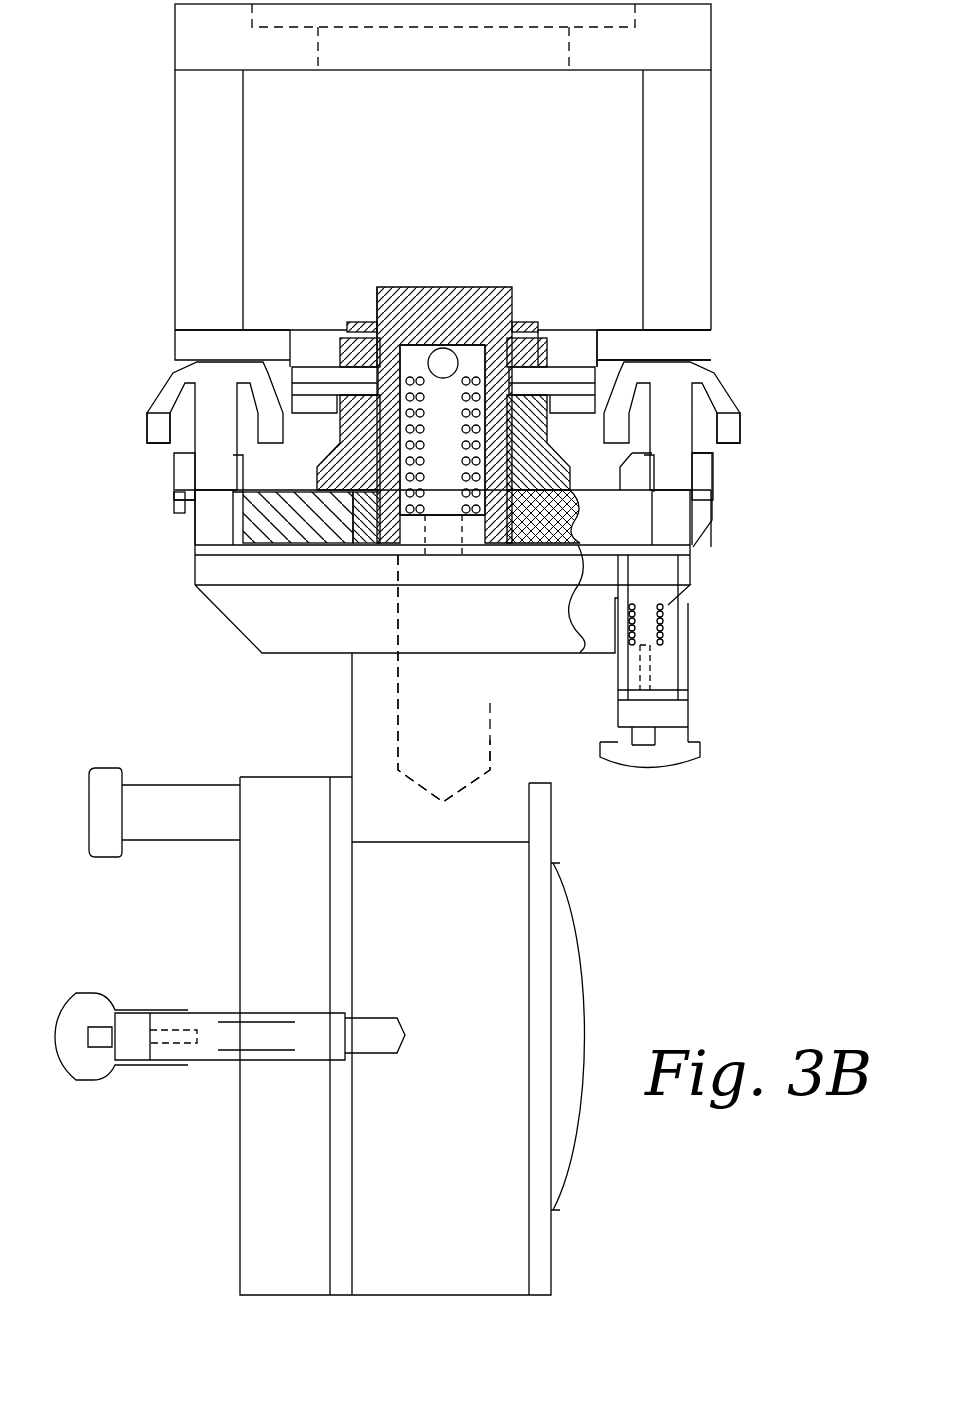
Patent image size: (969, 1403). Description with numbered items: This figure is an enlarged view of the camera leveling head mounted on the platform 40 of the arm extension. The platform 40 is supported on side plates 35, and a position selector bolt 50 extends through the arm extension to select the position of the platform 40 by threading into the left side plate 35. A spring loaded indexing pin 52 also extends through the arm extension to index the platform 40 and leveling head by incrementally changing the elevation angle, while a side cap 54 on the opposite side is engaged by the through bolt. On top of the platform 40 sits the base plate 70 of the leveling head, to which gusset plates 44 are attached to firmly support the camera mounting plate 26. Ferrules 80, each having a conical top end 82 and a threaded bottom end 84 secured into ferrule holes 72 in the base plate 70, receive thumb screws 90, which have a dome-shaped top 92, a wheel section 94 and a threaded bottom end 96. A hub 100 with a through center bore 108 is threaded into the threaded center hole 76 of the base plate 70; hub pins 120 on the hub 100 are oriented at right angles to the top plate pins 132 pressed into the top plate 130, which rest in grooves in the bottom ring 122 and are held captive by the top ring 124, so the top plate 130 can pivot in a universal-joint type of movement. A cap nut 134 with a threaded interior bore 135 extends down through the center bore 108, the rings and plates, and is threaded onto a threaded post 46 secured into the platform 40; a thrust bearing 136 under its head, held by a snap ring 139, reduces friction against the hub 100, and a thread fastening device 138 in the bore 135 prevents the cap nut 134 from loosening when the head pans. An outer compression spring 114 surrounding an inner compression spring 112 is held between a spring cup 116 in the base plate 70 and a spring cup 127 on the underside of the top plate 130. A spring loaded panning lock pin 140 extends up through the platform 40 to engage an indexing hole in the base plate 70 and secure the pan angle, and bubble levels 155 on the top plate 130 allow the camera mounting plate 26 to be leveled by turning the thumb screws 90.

The camera mounting plate 26 is at (690, 42).
The gusset plates 44 is at (680, 148).
The bubble levels 155 is at (650, 330).
The base plate 70 is at (280, 535).
The top plate 130 is at (215, 345).
The spherical or dome-shaped top 92 is at (660, 345).
The bottom ring 122 is at (690, 352).
The thumb screw 90 is at (160, 385).
The threaded bottom end 96 is at (220, 445).
The wheel section 94 is at (720, 420).
The conical top end 82 is at (180, 460).
The ferrules 80 is at (172, 483).
The ferrule holes 72 is at (180, 507).
The threaded bottom end 84 is at (225, 500).
The hub 100 is at (620, 490).
The cap nut 134 is at (430, 300).
The snap ring 139 is at (373, 300).
The outer compression spring 114 is at (450, 348).
The inner compression spring 112 is at (450, 515).
The spring cup 116 is at (475, 560).
The center bore 108 is at (555, 330).
The top plate pins 132 is at (405, 325).
The thrust bearing 136 is at (527, 330).
The hub pins 120 is at (335, 335).
The top ring 124 is at (572, 330).
The threaded interior bore 135 is at (345, 440).
The spring cup 127 is at (320, 550).
The threaded center hole 76 is at (375, 550).
The thread fastening device 138 is at (470, 560).
The platform 40 is at (258, 612).
The threaded post 46 is at (480, 757).
The panning lock pin 140 is at (662, 740).
The position selector bolt 50 is at (175, 822).
The side plates 35 is at (332, 1230).
The side cap 54 is at (570, 965).
The indexing pin 52 is at (78, 1060).